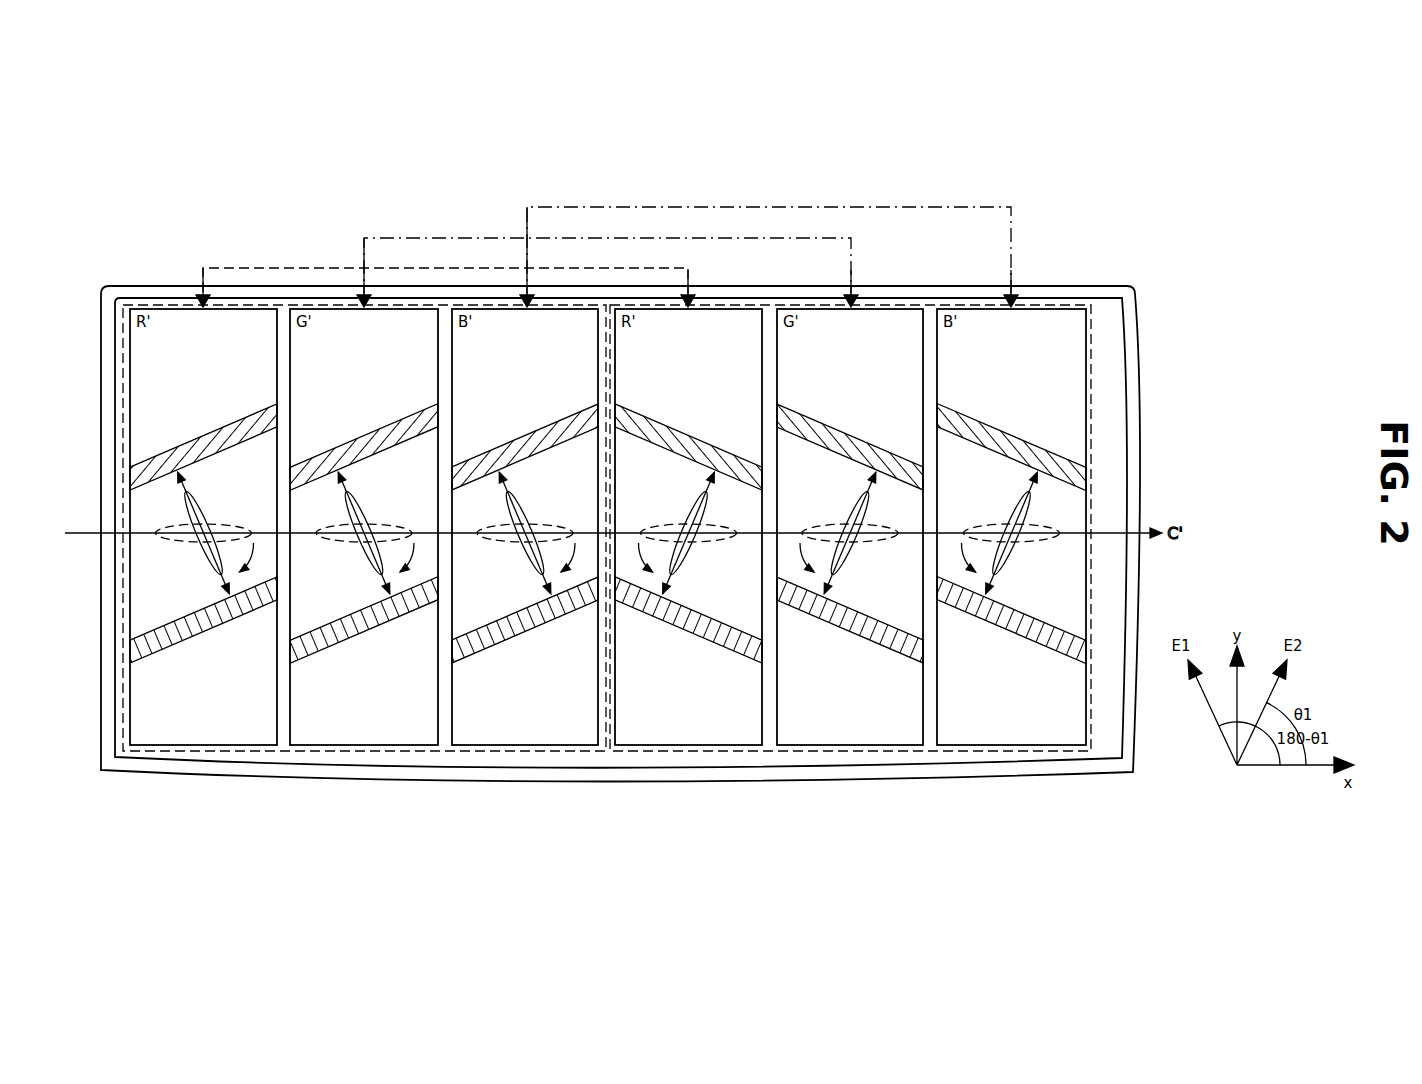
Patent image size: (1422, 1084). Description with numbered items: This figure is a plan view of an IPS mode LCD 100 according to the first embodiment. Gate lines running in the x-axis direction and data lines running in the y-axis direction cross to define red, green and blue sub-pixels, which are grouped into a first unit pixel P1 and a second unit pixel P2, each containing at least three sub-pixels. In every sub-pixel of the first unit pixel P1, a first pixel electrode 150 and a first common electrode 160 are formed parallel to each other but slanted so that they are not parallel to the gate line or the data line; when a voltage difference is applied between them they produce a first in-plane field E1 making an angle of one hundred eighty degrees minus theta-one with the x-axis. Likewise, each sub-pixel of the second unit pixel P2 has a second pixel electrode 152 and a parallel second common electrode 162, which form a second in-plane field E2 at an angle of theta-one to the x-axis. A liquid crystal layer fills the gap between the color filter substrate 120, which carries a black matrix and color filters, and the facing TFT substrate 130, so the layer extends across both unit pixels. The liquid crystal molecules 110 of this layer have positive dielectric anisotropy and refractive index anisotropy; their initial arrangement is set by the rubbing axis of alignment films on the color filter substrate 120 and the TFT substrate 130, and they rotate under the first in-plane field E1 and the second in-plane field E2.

The IPS mode LCD 100 is at (636, 494).
The liquid crystal molecules 110 is at (361, 507).
The color filter substrate 120 is at (571, 768).
The TFT substrate 130 is at (616, 781).
The first pixel electrode 150 is at (206, 448).
The first common electrode 160 is at (200, 634).
The second pixel electrode 152 is at (686, 440).
The second common electrode 162 is at (685, 630).
The first unit pixel P1 is at (283, 305).
The second unit pixel P2 is at (1057, 305).
The first in-plane field E1 is at (221, 586).
The second in-plane field E2 is at (669, 586).